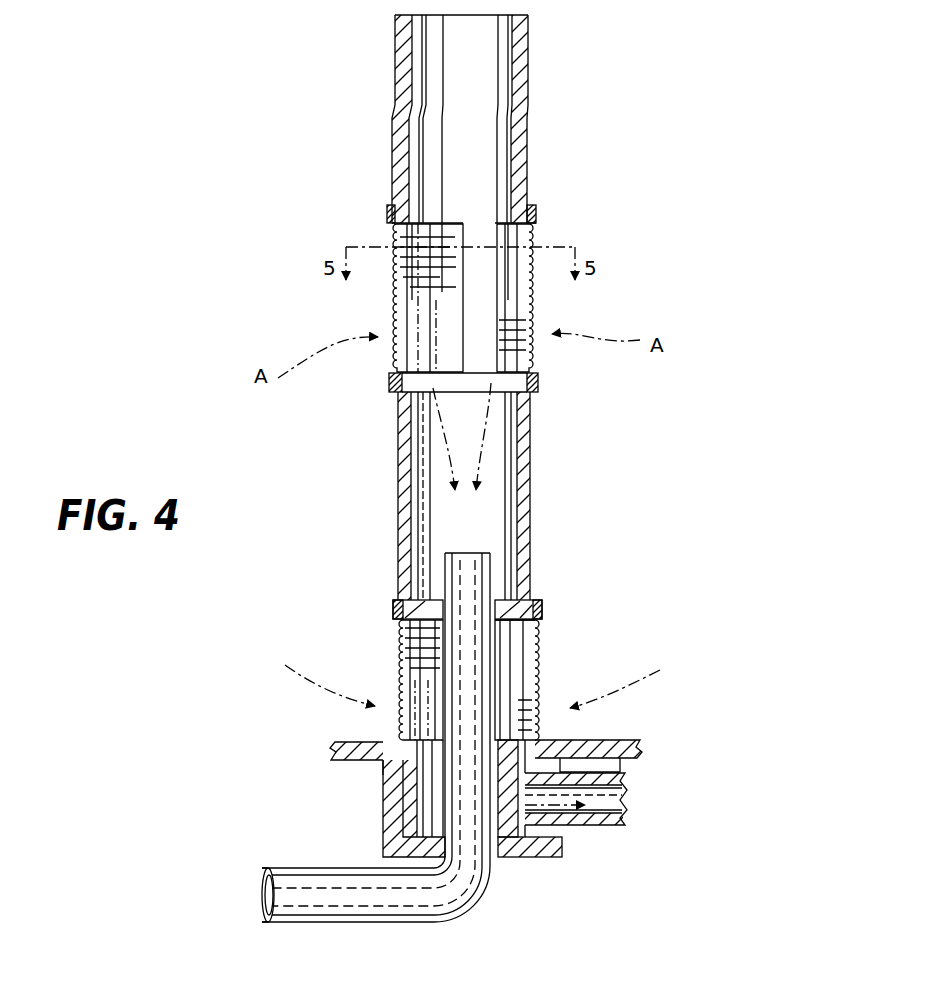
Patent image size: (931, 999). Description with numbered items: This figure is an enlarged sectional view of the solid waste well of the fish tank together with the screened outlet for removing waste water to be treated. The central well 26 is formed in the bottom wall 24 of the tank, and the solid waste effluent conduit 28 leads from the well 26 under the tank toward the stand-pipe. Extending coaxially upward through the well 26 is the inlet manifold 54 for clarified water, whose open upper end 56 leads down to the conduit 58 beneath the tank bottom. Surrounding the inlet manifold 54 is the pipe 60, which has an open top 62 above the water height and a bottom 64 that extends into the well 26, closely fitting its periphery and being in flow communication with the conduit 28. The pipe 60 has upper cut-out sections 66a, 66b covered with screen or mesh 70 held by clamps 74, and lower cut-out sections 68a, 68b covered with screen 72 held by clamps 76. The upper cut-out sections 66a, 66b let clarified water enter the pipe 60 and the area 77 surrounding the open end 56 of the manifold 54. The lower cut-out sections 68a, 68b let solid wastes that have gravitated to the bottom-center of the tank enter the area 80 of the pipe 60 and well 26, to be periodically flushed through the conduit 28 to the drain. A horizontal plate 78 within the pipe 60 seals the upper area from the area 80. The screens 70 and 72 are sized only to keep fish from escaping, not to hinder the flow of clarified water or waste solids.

The open top 62 is at (520, 60).
The clamp 74 is at (387, 207).
The upper cut-out section 66a is at (397, 297).
The upper cut-out section 66b is at (529, 295).
The screen or mesh 70 is at (397, 318).
The pipe 60 is at (530, 430).
The area surrounding open end of manifold 77 is at (497, 492).
The open upper end 56 is at (495, 552).
The horizontal plate 78 is at (512, 600).
The inlet manifold 54 is at (536, 630).
The lower cut-out section 68a is at (403, 640).
The lower cut-out section 68b is at (537, 657).
The area 80 is at (538, 662).
The screen 72 is at (403, 657).
The bottom wall 24 is at (352, 745).
The clamp 76 is at (396, 600).
The central well 26 is at (393, 805).
The bottom 64 is at (413, 830).
The conduit 58 is at (266, 905).
The solid waste effluent conduit 28 is at (625, 805).